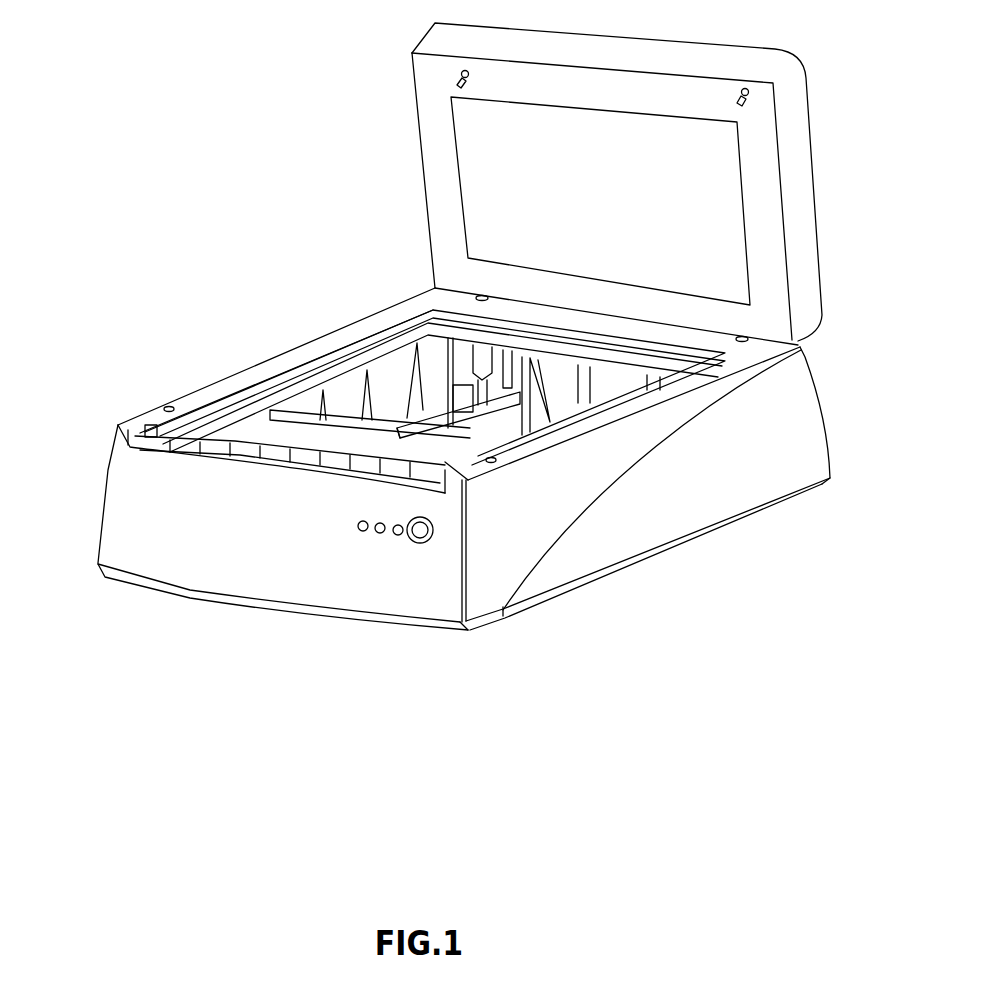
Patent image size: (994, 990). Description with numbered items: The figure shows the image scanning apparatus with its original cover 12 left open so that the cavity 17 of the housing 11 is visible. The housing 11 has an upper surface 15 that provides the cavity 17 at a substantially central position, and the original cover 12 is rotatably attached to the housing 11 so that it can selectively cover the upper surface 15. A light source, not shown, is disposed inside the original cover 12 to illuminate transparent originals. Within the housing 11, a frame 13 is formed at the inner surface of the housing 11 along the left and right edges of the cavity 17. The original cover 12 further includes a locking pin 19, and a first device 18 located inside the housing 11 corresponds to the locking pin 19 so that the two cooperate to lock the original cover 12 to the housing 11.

The housing 11 is at (217, 543).
The original cover 12 is at (795, 207).
The frame 13 is at (403, 318).
The upper surface 15 is at (280, 362).
The cavity 17 is at (423, 403).
The first device 18 is at (168, 408).
The locking pin 19 is at (455, 80).